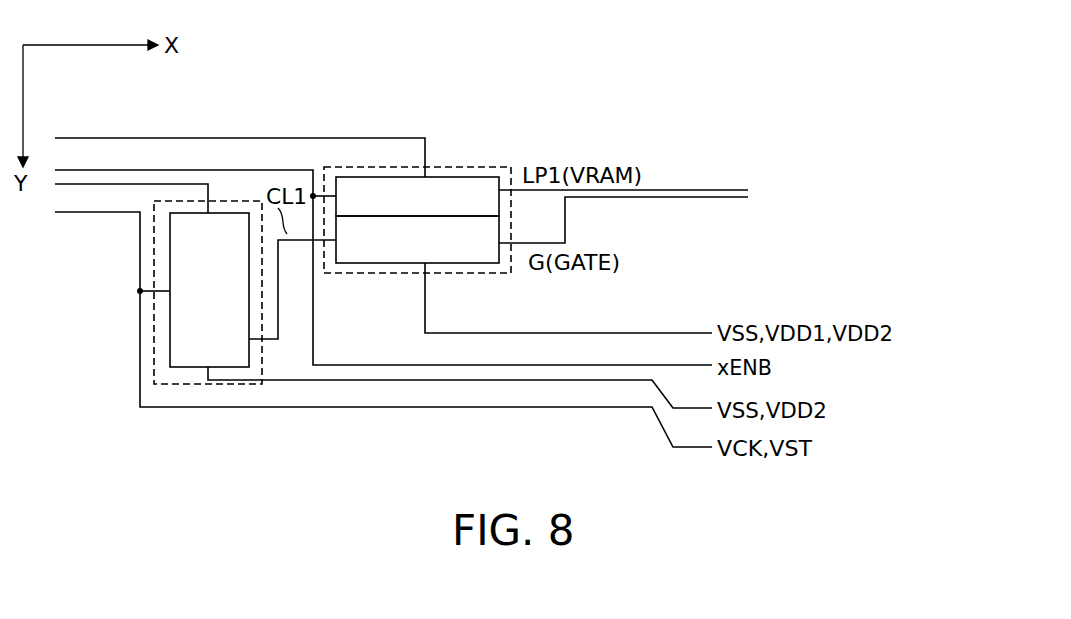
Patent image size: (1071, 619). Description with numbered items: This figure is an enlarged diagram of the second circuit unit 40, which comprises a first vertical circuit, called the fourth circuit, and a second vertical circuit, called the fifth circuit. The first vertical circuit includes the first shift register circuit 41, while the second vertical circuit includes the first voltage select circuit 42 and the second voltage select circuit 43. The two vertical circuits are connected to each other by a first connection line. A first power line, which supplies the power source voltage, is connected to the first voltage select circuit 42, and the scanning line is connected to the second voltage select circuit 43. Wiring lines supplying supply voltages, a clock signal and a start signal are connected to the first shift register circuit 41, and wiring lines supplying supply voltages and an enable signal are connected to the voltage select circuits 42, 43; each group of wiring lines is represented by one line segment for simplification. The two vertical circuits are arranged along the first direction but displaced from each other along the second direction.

The second circuit unit 40 is at (231, 196).
The first shift register circuit 41 is at (180, 342).
The first voltage select circuit 42 is at (437, 182).
The second voltage select circuit 43 is at (457, 238).